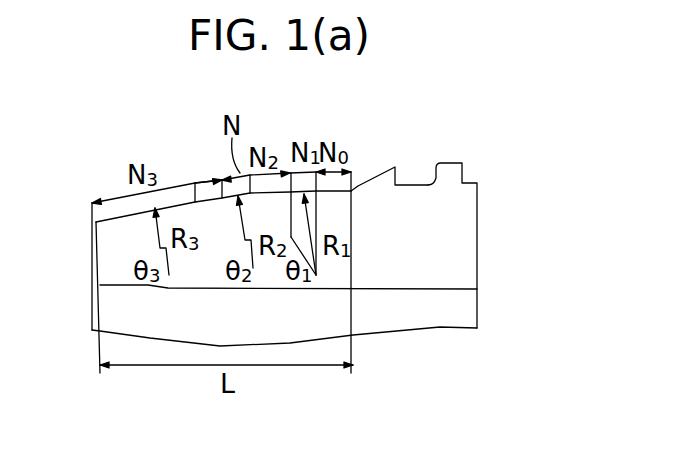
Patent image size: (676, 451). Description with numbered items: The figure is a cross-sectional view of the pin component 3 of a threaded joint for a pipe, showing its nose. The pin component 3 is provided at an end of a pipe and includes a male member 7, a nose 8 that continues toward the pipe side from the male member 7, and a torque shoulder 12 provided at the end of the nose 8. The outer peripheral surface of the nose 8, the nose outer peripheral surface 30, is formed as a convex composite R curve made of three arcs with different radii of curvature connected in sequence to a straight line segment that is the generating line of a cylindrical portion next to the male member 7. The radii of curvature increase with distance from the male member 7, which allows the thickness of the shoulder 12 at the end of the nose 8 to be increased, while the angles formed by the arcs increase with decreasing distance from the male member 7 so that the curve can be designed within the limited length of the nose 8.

The torque shoulder 12 is at (102, 240).
The nose outer peripheral surface 30 is at (195, 183).
The pin component 3 is at (372, 177).
The male member 7 is at (413, 175).
The nose 8 is at (207, 277).